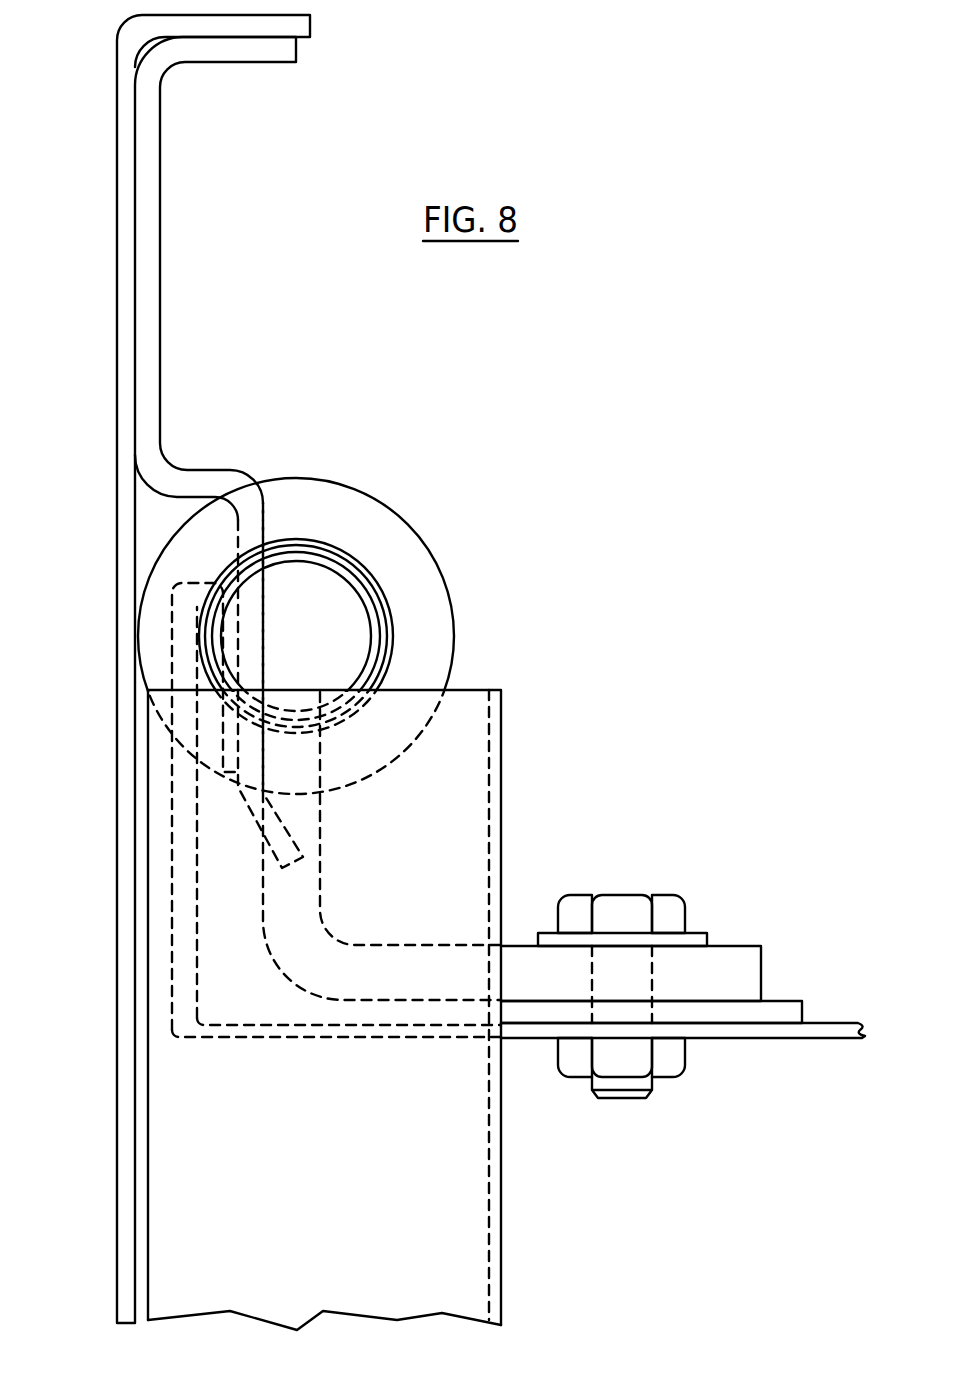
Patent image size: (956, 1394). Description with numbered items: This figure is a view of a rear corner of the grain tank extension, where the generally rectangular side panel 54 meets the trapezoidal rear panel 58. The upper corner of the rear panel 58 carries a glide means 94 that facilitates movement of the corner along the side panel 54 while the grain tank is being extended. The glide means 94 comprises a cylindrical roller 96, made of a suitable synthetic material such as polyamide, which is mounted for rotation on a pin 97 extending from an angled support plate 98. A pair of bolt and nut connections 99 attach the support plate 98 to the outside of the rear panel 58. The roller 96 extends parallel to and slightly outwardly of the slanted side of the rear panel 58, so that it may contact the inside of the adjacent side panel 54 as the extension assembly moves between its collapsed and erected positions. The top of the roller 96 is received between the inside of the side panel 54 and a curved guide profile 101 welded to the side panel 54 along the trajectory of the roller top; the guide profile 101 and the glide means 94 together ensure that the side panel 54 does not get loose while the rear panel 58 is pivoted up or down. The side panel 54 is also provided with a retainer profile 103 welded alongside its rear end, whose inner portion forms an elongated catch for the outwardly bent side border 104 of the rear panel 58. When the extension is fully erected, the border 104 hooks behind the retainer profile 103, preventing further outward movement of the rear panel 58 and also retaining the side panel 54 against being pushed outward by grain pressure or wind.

The side panel 54 is at (117, 805).
The rear panel 58 is at (720, 1040).
The glide means 94 is at (430, 460).
The cylindrical roller 96 is at (437, 603).
The pin 97 is at (337, 590).
The angled support plate 98 is at (750, 947).
The bolt and nut connection 99 is at (612, 893).
The curved guide profile 101 is at (502, 1190).
The retainer profile 103 is at (180, 475).
The outwardly bent side border 104 is at (177, 937).